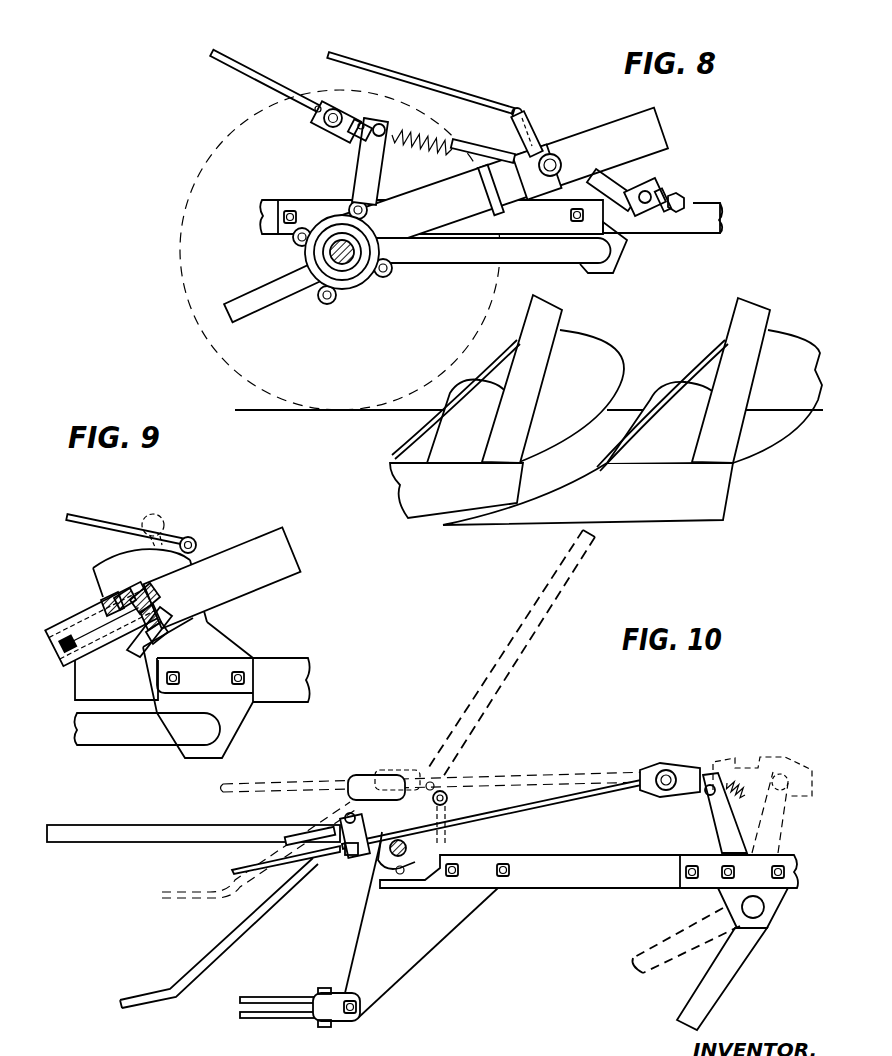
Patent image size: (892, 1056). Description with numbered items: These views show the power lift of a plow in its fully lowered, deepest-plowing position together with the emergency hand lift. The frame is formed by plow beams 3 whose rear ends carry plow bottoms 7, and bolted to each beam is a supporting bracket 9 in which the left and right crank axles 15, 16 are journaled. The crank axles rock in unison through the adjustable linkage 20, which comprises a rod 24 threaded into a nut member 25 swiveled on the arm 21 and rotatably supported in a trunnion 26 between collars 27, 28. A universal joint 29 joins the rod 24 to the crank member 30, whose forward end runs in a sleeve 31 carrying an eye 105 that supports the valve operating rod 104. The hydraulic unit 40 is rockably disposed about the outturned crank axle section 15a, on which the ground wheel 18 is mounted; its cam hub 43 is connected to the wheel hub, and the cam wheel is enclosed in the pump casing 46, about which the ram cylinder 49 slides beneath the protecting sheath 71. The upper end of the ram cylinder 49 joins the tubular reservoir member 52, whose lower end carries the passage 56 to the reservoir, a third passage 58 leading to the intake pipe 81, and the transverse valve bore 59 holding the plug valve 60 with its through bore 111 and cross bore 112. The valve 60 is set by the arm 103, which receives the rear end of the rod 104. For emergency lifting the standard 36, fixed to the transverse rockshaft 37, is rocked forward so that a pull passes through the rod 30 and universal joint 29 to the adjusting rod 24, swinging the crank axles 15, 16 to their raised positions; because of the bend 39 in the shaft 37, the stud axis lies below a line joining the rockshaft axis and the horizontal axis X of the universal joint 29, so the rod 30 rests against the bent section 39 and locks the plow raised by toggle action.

In FIG. 8, the plow beam 3 is at (266, 210).
In FIG. 9, the plow beam 3 is at (270, 670).
In FIG. 10, the plow beam 3 is at (519, 941).
In FIG. 8, the plow bottom 7 is at (528, 80).
In FIG. 8, the supporting bracket 9 is at (615, 253).
In FIG. 9, the supporting bracket 9 is at (236, 717).
In FIG. 8, the left crank axle 15 is at (522, 272).
In FIG. 9, the left crank axle 15 is at (138, 750).
In FIG. 8, the laterally outturned crank axle section 15a is at (328, 250).
In FIG. 10, the right crank axle 16 is at (710, 985).
In FIG. 8, the ground wheel 18 is at (651, 182).
In FIG. 8, the adjustable linkage 20 is at (422, 152).
In FIG. 8, the arm 21 is at (352, 166).
In FIG. 8, the rod 24 is at (470, 162).
In FIG. 10, the rod 24 is at (748, 796).
In FIG. 8, the nut member 25 is at (382, 120).
In FIG. 8, the trunnion 26 is at (668, 190).
In FIG. 8, the collar 27 is at (638, 186).
In FIG. 8, the collar 28 is at (682, 202).
In FIG. 8, the universal joint 29 is at (320, 138).
In FIG. 10, the universal joint 29 is at (660, 806).
In FIG. 8, the crank member 30 is at (256, 62).
In FIG. 10, the crank member 30 is at (557, 803).
In FIG. 10, the sleeve 31 is at (360, 866).
In FIG. 10, the standard 36 is at (90, 832).
In FIG. 10, the transverse shaft 37 is at (396, 823).
In FIG. 10, the bend 39 is at (412, 884).
In FIG. 8, the hydraulic unit 40 is at (424, 247).
In FIG. 8, the hub 43 is at (330, 270).
In FIG. 8, the pump casing 46 is at (358, 283).
In FIG. 8, the ram cylinder 49 is at (516, 190).
In FIG. 9, the ram cylinder 49 is at (52, 610).
In FIG. 8, the tubular member 52 is at (617, 128).
In FIG. 9, the tubular member 52 is at (278, 578).
In FIG. 9, the passage 56 is at (153, 610).
In FIG. 9, the third passage 58 is at (103, 605).
In FIG. 9, the valve bore 59 is at (140, 640).
In FIG. 9, the plug valve 60 is at (155, 631).
In FIG. 8, the protecting sheath 71 is at (430, 207).
In FIG. 9, the intake pipe 81 is at (68, 652).
In FIG. 9, the arm 103 is at (197, 557).
In FIG. 8, the operating rod 104 is at (415, 84).
In FIG. 9, the operating rod 104 is at (97, 527).
In FIG. 10, the eye 105 is at (338, 858).
In FIG. 9, the through bore 111 is at (128, 592).
In FIG. 9, the cross bore 112 is at (152, 596).
In FIG. 10, the horizontal axis of the universal joint x is at (670, 770).